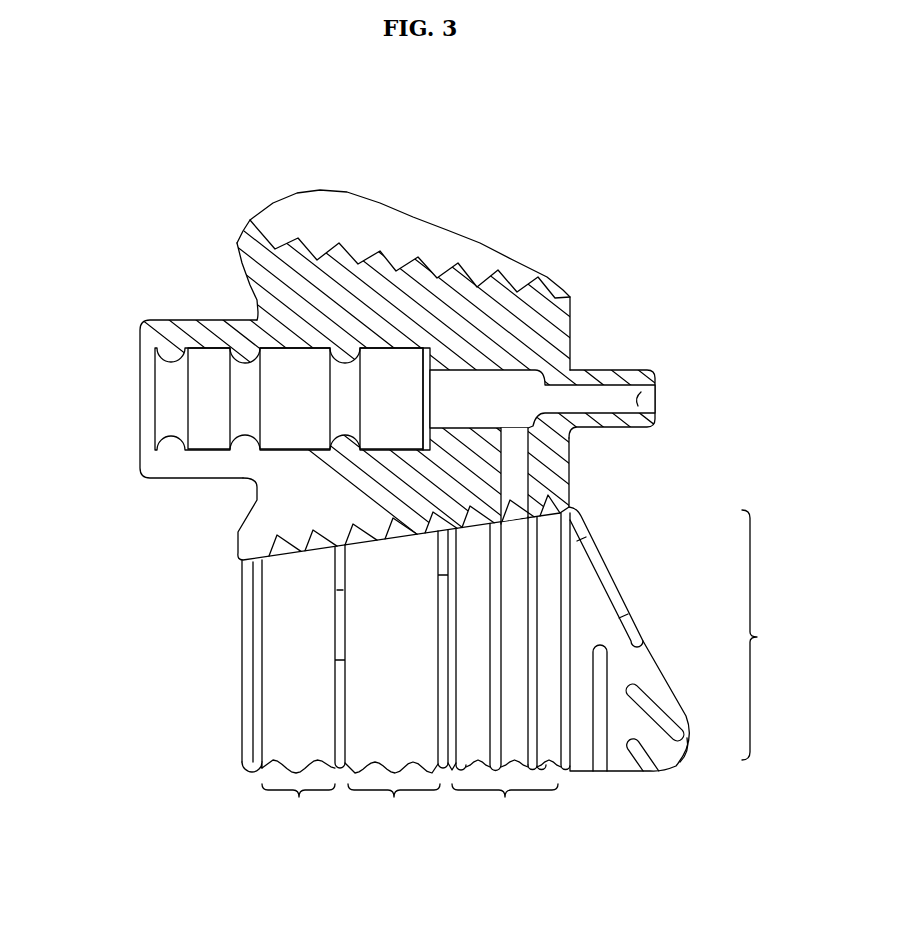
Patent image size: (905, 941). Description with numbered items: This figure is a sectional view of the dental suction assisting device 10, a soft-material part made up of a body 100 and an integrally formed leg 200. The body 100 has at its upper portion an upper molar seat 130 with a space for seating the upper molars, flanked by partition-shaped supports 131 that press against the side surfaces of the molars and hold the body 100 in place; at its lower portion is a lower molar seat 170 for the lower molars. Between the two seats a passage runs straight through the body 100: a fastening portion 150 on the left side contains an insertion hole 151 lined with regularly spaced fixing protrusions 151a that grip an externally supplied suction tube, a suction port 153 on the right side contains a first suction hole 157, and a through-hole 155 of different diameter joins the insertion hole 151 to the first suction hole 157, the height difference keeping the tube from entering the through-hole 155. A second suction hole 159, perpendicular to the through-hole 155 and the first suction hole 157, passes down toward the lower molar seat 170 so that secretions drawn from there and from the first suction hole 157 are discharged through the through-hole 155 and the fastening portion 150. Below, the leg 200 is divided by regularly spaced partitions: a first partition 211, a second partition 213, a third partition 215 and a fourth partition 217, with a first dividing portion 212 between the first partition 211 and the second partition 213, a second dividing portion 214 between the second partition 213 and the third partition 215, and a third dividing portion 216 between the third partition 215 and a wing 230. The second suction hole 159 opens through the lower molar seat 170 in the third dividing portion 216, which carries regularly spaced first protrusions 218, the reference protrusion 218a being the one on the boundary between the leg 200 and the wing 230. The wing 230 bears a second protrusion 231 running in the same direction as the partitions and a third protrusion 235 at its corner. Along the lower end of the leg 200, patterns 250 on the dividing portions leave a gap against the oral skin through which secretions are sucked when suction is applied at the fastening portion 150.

The suction assisting device 10 is at (183, 207).
The body 100 is at (330, 293).
The upper molar seat 130 is at (383, 245).
The support 131 is at (352, 210).
The fastening portion 150 is at (202, 330).
The insertion hole 151 is at (203, 386).
The fixing protrusions 151a is at (164, 447).
The suction port 153 is at (620, 366).
The through-hole 155 is at (454, 403).
The first suction hole 157 is at (660, 398).
The second suction hole 159 is at (516, 468).
The lower molar seat 170 is at (237, 553).
The leg 200 is at (685, 639).
The first partition 211 is at (247, 722).
The first dividing portion 212 is at (298, 797).
The second partition 213 is at (340, 762).
The second dividing portion 214 is at (392, 798).
The third partition 215 is at (444, 762).
The third dividing portion 216 is at (504, 675).
The fourth partition 217 is at (623, 598).
The first protrusions 218 is at (497, 590).
The reference protrusion 218a is at (565, 740).
The wing 230 is at (653, 684).
The second protrusion 231 is at (603, 765).
The third protrusion 235 is at (664, 773).
The patterns 250 is at (275, 765).